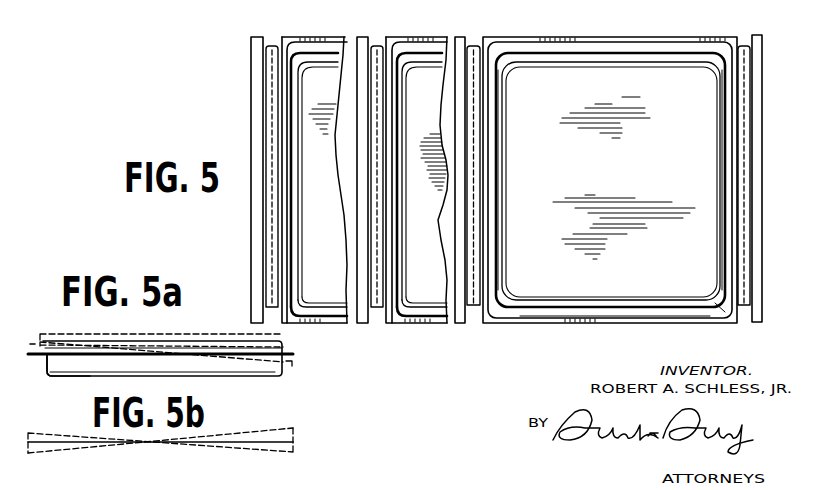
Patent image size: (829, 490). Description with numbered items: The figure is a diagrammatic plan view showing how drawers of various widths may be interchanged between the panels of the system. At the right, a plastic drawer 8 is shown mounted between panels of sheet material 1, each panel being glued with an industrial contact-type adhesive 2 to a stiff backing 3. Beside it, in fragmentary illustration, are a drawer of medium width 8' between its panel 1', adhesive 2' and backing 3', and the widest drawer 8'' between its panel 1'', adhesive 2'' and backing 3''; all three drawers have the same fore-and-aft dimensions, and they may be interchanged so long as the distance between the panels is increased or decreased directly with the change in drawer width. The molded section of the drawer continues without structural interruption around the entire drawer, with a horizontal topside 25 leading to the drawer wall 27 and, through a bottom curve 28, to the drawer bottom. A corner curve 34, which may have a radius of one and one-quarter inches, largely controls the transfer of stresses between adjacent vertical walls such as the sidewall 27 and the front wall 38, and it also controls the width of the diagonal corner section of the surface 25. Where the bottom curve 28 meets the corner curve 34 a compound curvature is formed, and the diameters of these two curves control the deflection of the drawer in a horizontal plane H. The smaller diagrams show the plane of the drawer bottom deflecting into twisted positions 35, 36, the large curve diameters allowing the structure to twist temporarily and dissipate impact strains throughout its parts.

In FIG. 5, the panel of sheet material 1 is at (606, 160).
In FIG. 5, the industrial contact-type adhesive 2 is at (472, 153).
In FIG. 5, the stiff backing 3 is at (609, 167).
In FIG. 5, the plastic drawer 8 is at (610, 164).
In FIG. 5A, the plastic drawer 8 is at (156, 375).
In FIG. 5, the panel of sheet material 1' is at (414, 196).
In FIG. 5, the industrial contact-type adhesive 2' is at (561, 182).
In FIG. 5, the stiff backing 3' is at (355, 193).
In FIG. 5, the drawer of medium width 8' is at (417, 164).
In FIG. 5, the panel of sheet material 1'' is at (310, 165).
In FIG. 5, the industrial contact-type adhesive 2'' is at (265, 157).
In FIG. 5, the stiff backing 3'' is at (238, 180).
In FIG. 5, the widest drawer 8'' is at (314, 165).
In FIG. 5, the horizontal topside 25 is at (728, 100).
In FIG. 5, the drawer wall 27 is at (492, 176).
In FIG. 5A, the bottom curve 28 is at (48, 377).
In FIG. 5, the corner curve 34 is at (723, 303).
In FIG. 5A, the twisted position 35 is at (284, 335).
In FIG. 5B, the twisted position 35 is at (290, 428).
In FIG. 5A, the twisted position 36 is at (290, 366).
In FIG. 5B, the twisted position 36 is at (290, 452).
In FIG. 5, the front wall 38 is at (603, 314).
In FIG. 5A, the horizontal plane H is at (293, 354).
In FIG. 5B, the horizontal plane H is at (293, 442).